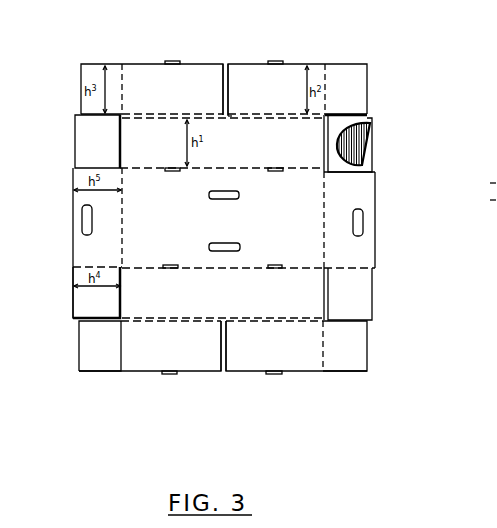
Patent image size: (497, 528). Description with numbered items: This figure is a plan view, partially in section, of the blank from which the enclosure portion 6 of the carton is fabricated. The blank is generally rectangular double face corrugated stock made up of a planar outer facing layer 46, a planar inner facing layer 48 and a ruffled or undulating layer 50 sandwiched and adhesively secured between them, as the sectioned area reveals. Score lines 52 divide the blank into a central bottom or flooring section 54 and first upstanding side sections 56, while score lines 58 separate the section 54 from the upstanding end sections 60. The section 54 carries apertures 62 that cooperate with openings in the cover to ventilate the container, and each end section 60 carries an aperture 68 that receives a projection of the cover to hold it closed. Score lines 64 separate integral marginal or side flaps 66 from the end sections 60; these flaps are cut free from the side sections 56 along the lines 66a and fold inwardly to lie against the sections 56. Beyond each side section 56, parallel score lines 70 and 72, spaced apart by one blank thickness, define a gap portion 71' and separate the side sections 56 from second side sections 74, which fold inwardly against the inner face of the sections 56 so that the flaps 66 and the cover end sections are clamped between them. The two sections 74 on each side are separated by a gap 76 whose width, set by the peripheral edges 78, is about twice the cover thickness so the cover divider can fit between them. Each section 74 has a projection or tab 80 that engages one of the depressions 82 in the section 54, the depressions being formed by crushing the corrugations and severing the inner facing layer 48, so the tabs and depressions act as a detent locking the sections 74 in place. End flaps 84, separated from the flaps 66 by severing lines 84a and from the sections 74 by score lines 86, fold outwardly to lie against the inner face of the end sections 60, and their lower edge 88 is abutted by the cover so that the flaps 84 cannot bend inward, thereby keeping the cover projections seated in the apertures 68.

The enclosure portion 6 is at (394, 258).
The planar outer facing layer 46 is at (368, 145).
The planar inner facing layer 48 is at (329, 170).
The undulating layer 50 is at (354, 158).
The score lines 52 is at (229, 168).
The bottom or flooring section 54 is at (263, 220).
The first upstanding side sections 56 is at (222, 216).
The score lines 58 is at (123, 222).
The upstanding end sections 60 is at (88, 247).
The apertures 62 is at (239, 198).
The score lines 64 is at (355, 171).
The marginal or side flaps 66 is at (364, 125).
The severing lines 66a is at (326, 153).
The apertures 68 is at (81, 215).
The score lines 70 is at (156, 321).
The gap portion 71' is at (223, 170).
The score lines 72 is at (279, 117).
The second side sections 74 is at (243, 70).
The gap 76 is at (223, 94).
The peripheral edges 78 is at (228, 99).
The projection or tab 80 is at (173, 61).
The depressions 82 is at (178, 170).
The end flaps 84 is at (96, 70).
The severing lines 84a is at (105, 119).
The score lines 86 is at (122, 86).
The lower edge 88 is at (355, 65).